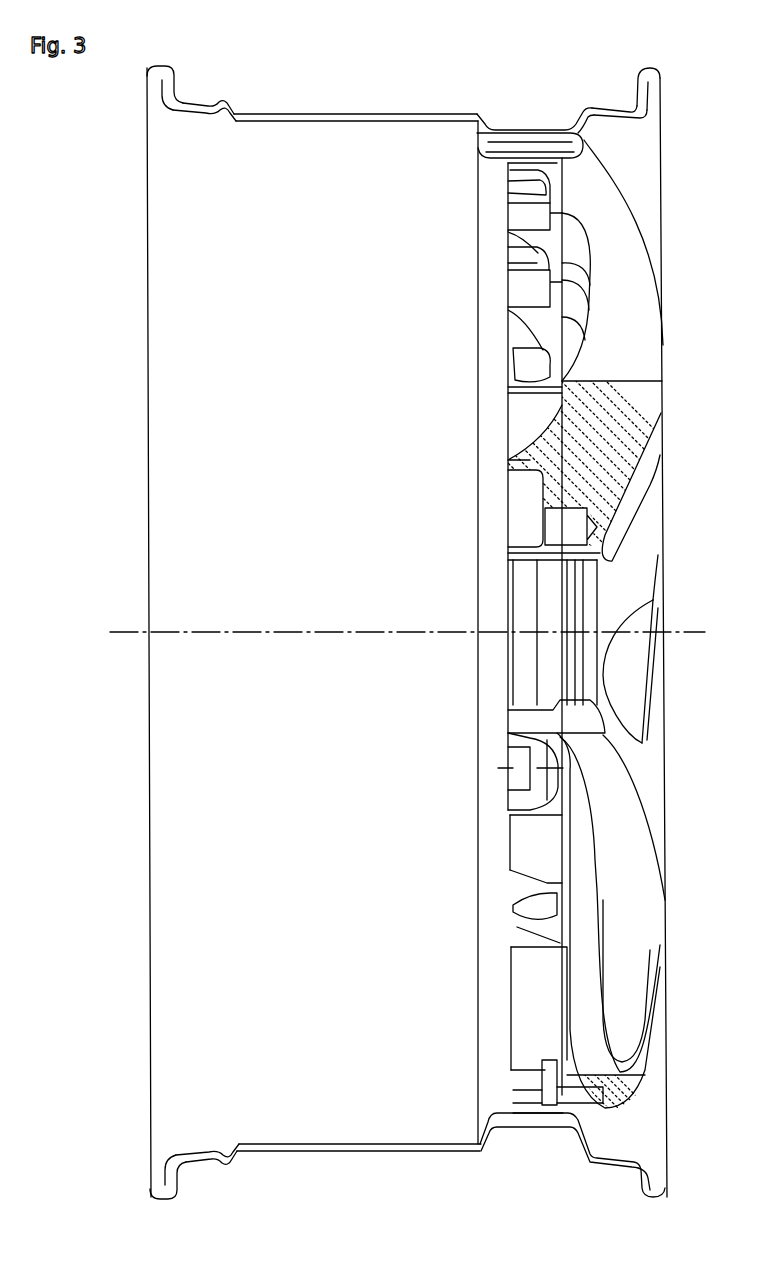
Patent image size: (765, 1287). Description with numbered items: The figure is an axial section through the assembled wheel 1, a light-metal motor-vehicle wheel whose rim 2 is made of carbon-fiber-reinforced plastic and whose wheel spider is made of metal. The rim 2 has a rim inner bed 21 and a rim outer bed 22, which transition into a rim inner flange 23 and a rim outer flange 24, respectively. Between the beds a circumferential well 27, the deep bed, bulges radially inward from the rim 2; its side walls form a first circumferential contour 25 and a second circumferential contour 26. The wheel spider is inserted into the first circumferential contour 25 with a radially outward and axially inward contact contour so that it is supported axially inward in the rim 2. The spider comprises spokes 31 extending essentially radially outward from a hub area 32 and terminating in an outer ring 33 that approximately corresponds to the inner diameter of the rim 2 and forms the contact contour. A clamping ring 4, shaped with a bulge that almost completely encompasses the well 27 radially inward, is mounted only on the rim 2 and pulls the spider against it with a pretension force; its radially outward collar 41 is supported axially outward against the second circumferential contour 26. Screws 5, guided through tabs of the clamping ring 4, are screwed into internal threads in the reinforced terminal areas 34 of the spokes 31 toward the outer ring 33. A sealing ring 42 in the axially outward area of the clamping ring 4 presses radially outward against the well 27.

The wheel 1 is at (350, 87).
The rim 2 is at (267, 120).
The clamping ring 4 is at (480, 127).
The collar 41 is at (497, 99).
The rim inner bed 21 is at (207, 103).
The rim outer bed 22 is at (620, 110).
The rim inner flange 23 is at (167, 84).
The rim outer flange 24 is at (640, 87).
The first circumferential contour 25 is at (563, 130).
The second circumferential contour 26 is at (488, 140).
The circumferential well 27 is at (523, 140).
The spokes 31 is at (580, 853).
The hub area 32 is at (516, 797).
The outer ring 33 is at (605, 1112).
The reinforced terminal areas 34 is at (597, 1075).
The sealing ring 42 is at (550, 1108).
The screws 5 is at (585, 1145).